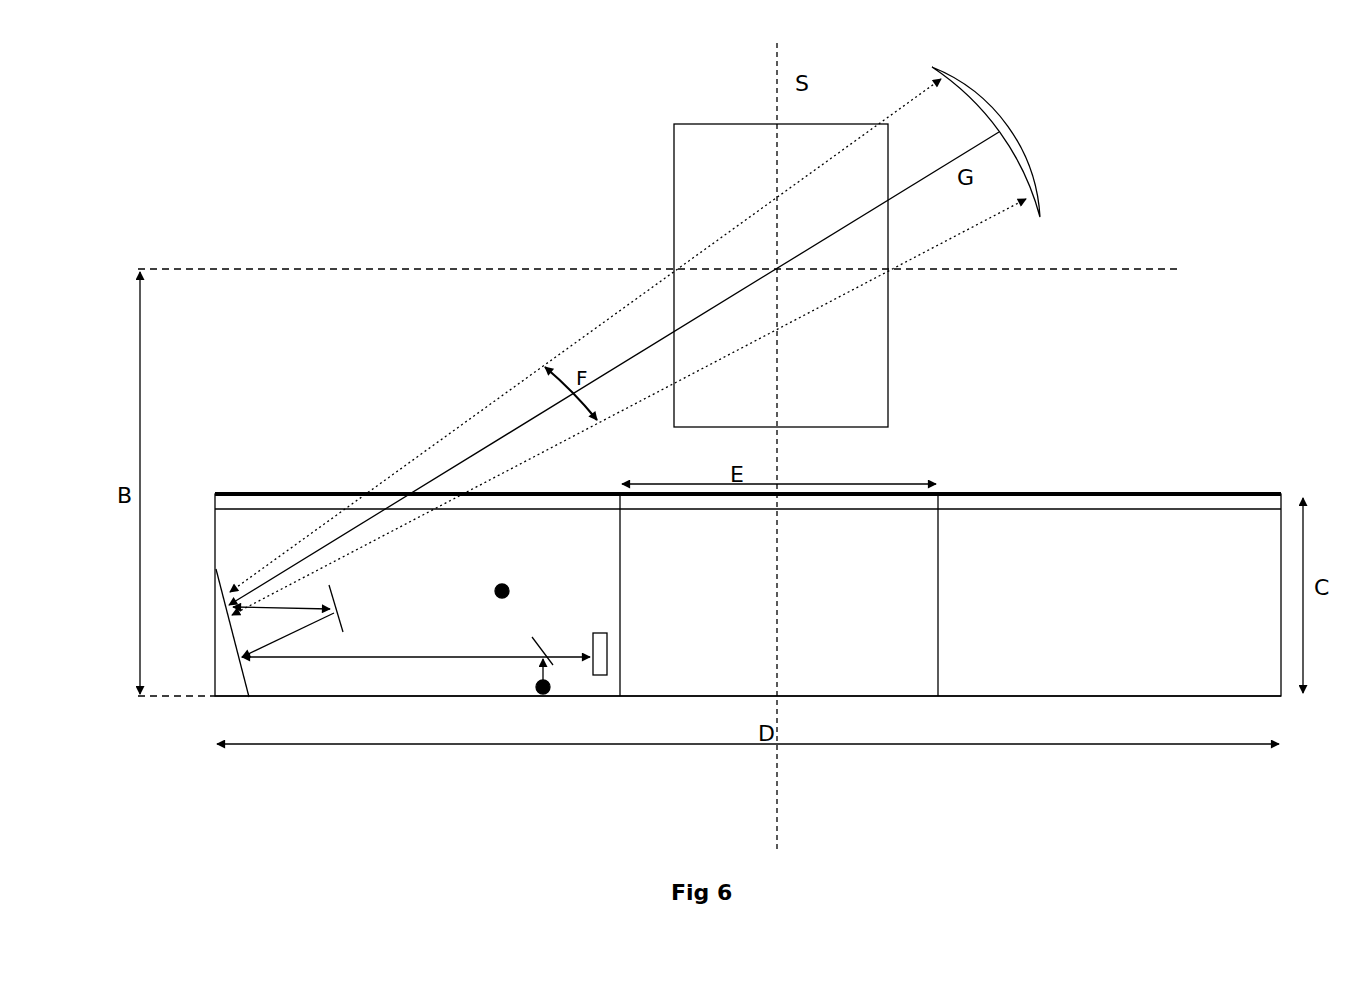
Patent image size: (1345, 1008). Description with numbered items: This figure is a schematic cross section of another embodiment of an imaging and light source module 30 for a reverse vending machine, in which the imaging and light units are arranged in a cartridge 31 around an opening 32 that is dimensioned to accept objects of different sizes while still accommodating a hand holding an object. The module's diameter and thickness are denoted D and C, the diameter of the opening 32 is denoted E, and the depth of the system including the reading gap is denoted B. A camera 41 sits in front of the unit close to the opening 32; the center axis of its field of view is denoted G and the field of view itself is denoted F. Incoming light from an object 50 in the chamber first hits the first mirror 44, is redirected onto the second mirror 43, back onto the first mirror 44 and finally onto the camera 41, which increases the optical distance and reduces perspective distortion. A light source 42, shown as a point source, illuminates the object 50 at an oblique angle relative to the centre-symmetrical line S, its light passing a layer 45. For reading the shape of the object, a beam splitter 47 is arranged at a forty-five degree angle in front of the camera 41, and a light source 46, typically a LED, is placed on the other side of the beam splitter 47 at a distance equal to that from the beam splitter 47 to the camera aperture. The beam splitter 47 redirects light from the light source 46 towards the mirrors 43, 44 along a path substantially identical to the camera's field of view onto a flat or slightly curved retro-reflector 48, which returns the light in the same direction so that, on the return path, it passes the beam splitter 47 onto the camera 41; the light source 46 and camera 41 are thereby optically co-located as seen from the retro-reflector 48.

The imaging and light source module 30 is at (1209, 451).
The cartridge 31 is at (1284, 699).
The opening 32 is at (779, 595).
The camera 41 is at (429, 640).
The light source 42 is at (519, 601).
The second mirror 43 is at (307, 621).
The first mirror 44 is at (246, 633).
The layer 45 is at (254, 491).
The light source 46 is at (537, 695).
The beam splitter 47 is at (553, 665).
The retro-reflector 48 is at (999, 142).
The object 50 is at (781, 275).